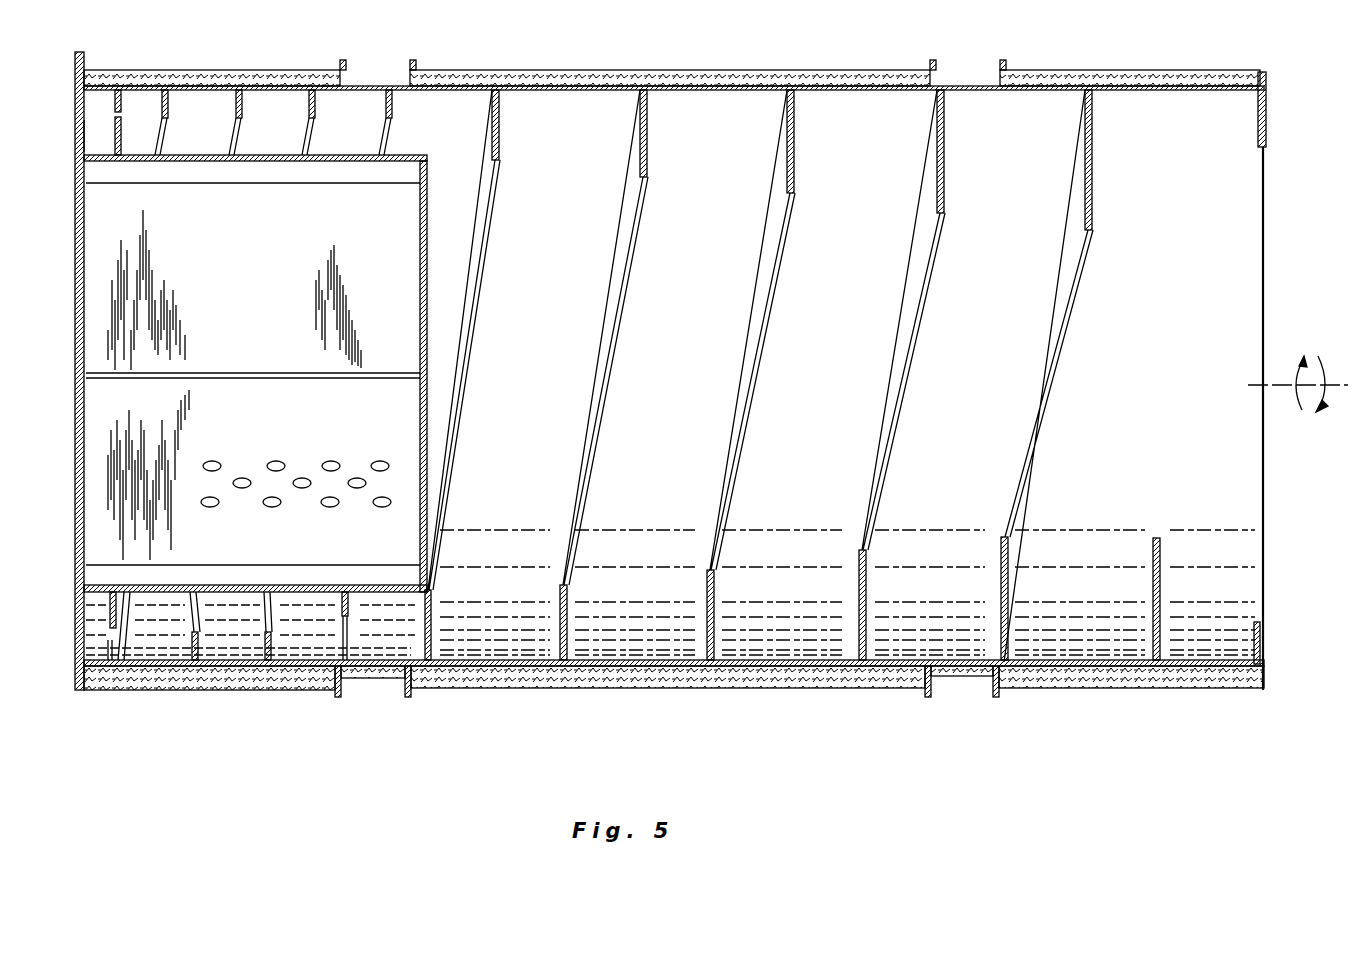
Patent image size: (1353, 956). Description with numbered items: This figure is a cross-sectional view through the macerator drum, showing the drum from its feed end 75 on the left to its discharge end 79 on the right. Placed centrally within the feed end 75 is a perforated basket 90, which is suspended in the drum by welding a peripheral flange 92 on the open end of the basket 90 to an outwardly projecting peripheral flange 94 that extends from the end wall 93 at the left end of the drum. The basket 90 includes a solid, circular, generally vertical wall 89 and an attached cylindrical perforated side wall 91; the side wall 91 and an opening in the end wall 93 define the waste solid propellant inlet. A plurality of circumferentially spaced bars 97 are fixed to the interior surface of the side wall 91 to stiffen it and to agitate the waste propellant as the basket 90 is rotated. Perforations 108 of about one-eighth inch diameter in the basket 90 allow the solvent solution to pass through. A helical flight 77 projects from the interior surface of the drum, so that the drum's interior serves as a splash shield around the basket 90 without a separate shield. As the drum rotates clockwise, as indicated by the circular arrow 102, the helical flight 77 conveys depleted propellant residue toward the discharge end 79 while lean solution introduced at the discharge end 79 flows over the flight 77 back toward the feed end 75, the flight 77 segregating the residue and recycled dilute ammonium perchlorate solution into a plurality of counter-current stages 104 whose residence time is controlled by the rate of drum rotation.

The feed end 75 is at (78, 616).
The helical flight 77 is at (310, 111).
The discharge end 79 is at (1262, 628).
The circular vertical wall 89 is at (427, 212).
The perforated basket 90 is at (228, 276).
The perforated side wall 91 is at (285, 162).
The peripheral flange 92 is at (80, 150).
The end wall 93 is at (78, 212).
The outwardly projecting peripheral flange 94 is at (84, 88).
The bars 97 is at (350, 176).
The circular arrow 102 is at (1318, 362).
The counter-current stages 104 is at (533, 448).
The perforations 108 is at (283, 462).